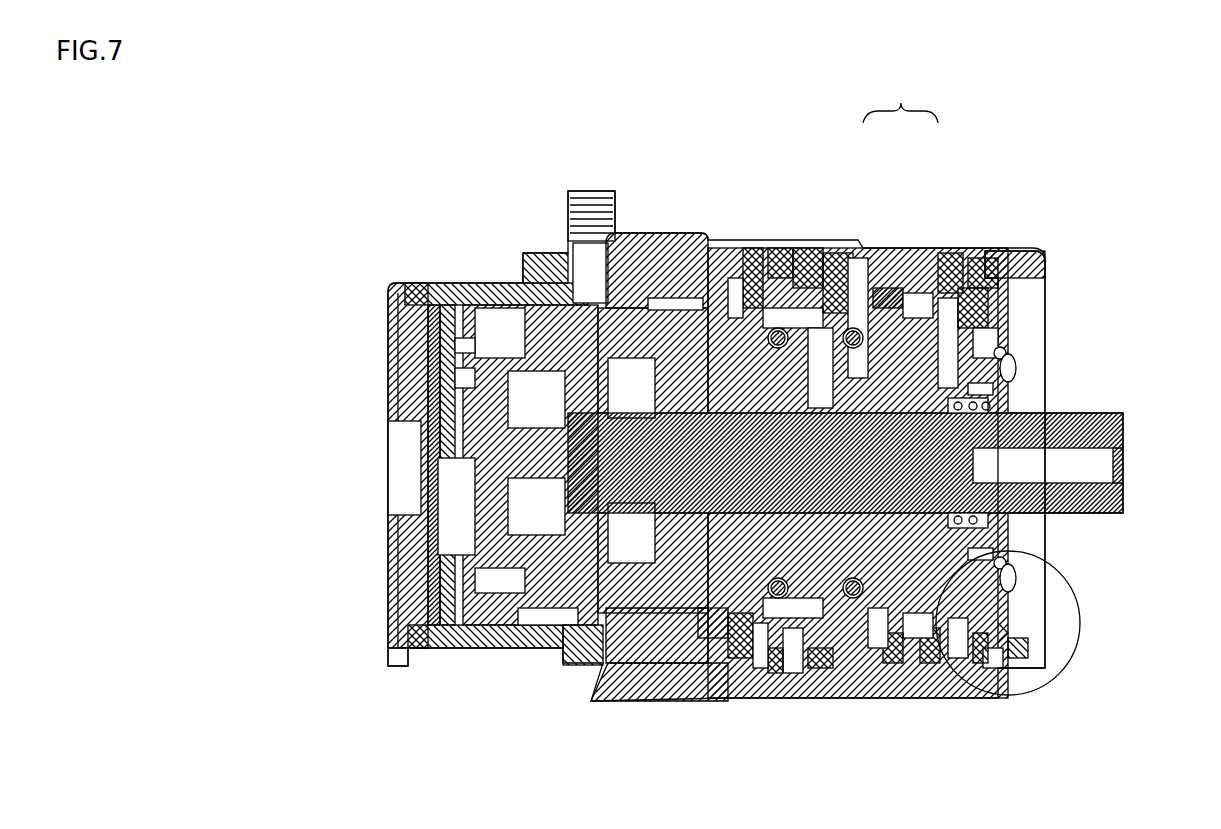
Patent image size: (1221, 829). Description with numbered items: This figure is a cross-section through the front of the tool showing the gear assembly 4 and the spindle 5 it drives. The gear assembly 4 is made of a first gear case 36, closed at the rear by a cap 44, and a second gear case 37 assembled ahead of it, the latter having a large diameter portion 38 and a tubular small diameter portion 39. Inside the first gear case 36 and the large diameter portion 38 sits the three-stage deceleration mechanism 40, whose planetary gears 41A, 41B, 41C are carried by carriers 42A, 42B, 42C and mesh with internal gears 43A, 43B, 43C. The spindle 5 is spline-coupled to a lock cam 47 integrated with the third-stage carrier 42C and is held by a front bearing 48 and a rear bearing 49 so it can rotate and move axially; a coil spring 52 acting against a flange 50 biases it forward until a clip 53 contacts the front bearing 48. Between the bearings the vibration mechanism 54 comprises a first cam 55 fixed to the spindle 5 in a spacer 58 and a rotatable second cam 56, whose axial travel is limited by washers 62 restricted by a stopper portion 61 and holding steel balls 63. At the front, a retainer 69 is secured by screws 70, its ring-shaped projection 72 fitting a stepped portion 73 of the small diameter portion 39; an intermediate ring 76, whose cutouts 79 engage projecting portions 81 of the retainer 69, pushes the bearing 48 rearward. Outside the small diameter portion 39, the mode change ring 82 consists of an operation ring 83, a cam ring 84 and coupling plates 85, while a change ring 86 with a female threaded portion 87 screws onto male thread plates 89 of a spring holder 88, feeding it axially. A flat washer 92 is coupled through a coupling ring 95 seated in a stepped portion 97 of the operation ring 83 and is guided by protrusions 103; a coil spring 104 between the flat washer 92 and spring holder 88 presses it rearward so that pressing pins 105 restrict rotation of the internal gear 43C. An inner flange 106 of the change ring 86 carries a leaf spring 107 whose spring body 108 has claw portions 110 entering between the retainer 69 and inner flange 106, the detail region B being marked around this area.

The gear assembly 4 is at (703, 150).
The spindle 5 is at (1105, 420).
The first gear case 36 is at (455, 300).
The second gear case 37 is at (670, 225).
The large diameter portion 38 is at (625, 350).
The small diameter portion 39 is at (815, 245).
The deceleration mechanism 40 is at (490, 300).
The planetary gear 41A is at (430, 300).
The planetary gear 41B is at (528, 275).
The planetary gear 41C is at (600, 240).
The carrier 42A is at (508, 365).
The carrier 42B is at (575, 185).
The carrier 42C is at (700, 300).
The internal gear 43A is at (440, 300).
The internal gear 43B is at (540, 640).
The internal gear 43C is at (585, 693).
The cap 44 is at (380, 378).
The lock cam 47 is at (700, 630).
The front bearing 48 is at (955, 260).
The rear bearing 49 is at (780, 215).
The flange 50 is at (975, 400).
The coil spring 52 is at (1060, 443).
The clip 53 is at (910, 640).
The vibration mechanism 54 is at (900, 94).
The first cam 55 is at (893, 285).
The second cam 56 is at (875, 280).
The spacer 58 is at (870, 640).
The stopper portion 61 is at (780, 665).
The washer 62 is at (805, 330).
The steel ball 63 is at (840, 640).
The retainer 69 is at (985, 330).
The screw 70 is at (1005, 360).
The projection 72 is at (993, 255).
The stepped portion 73 is at (975, 280).
The intermediate ring 76 is at (1000, 530).
The cutout 79 is at (985, 380).
The projecting portion 81 is at (995, 345).
The mode change ring 82 is at (790, 240).
The operation ring 83 is at (745, 240).
The cam ring 84 is at (948, 245).
The coupling plate 85 is at (835, 250).
The change ring 86 is at (1025, 260).
The female threaded portion 87 is at (920, 655).
The spring holder 88 is at (890, 650).
The male thread plate 89 is at (950, 650).
The flat washer 92 is at (735, 270).
The coupling ring 95 is at (755, 660).
The stepped portion 97 is at (768, 665).
The protrusion 103 is at (730, 640).
The coil spring 104 is at (810, 660).
The pressing pin 105 is at (640, 290).
The inner flange 106 is at (978, 655).
The leaf spring 107 is at (1003, 623).
The spring body 108 is at (1012, 645).
The claw portion 110 is at (985, 660).
The detail region B is at (1052, 666).